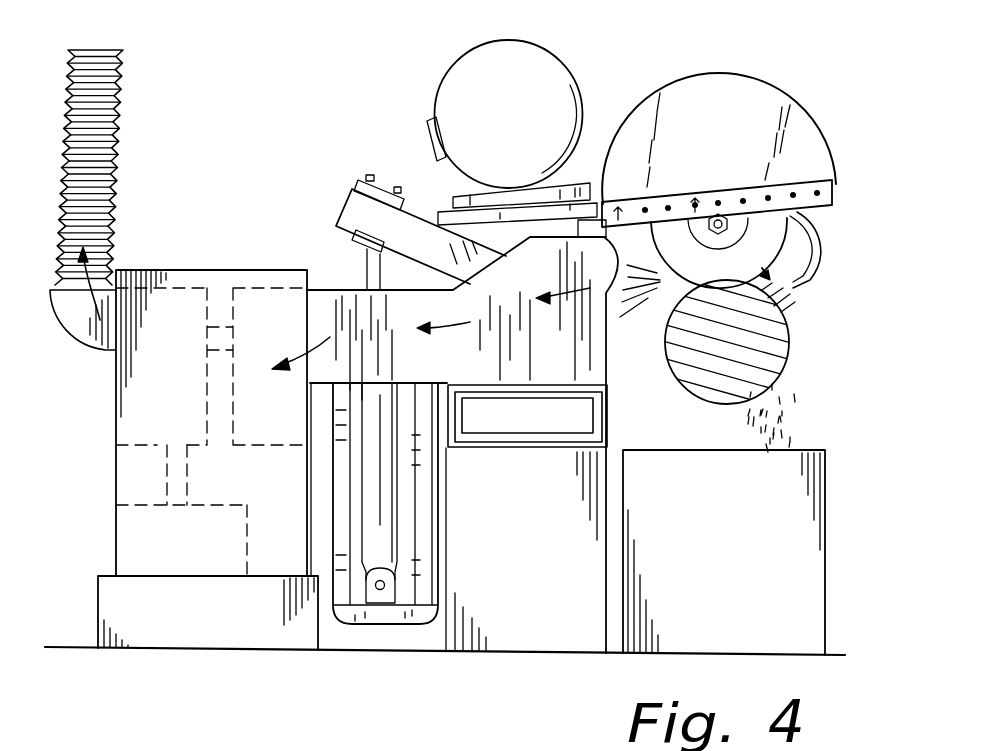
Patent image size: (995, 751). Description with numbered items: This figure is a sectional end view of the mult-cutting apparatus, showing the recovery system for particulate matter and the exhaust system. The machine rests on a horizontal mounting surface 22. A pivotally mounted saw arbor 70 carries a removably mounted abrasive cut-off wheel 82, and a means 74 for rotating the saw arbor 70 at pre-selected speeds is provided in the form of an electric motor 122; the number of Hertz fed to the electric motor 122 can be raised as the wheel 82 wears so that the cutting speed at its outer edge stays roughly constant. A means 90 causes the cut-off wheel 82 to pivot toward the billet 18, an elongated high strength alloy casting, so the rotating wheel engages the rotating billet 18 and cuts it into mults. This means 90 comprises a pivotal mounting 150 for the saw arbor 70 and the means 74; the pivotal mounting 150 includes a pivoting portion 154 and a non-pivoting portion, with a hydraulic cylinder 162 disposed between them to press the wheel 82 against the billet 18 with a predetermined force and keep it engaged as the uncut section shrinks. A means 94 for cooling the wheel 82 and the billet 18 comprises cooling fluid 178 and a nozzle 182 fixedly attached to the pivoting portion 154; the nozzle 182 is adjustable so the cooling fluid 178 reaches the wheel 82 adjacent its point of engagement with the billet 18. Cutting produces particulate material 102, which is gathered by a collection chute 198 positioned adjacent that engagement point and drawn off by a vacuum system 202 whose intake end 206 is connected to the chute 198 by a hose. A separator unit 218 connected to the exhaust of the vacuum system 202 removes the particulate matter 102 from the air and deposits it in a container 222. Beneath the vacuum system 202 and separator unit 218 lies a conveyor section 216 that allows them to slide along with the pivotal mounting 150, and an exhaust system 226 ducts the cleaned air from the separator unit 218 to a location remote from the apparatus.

The billet 18 is at (789, 328).
The horizontal mounting surface 22 is at (606, 372).
The saw arbor 70 is at (720, 214).
The means for rotating the saw arbor 74 is at (460, 62).
The abrasive cut-off wheel 82 is at (680, 232).
The means for causing the abrasive cut-off wheel to pivot toward the billet 90 is at (407, 503).
The means for cooling the abrasive cut-off wheel and the billet 94 is at (815, 240).
The particulate material 102 is at (628, 312).
The electric motor 122 is at (540, 67).
The pivotal mounting 150 is at (590, 158).
The pivoting portion 154 is at (410, 225).
The hydraulic cylinder 162 is at (335, 530).
The cooling fluid 178 is at (778, 312).
The nozzle 182 is at (793, 284).
The collection chute 198 is at (532, 371).
The vacuum system 202 is at (243, 310).
The intake end 206 is at (325, 290).
The conveyor section 216 is at (99, 575).
The separator unit 218 is at (123, 420).
The container 222 is at (198, 548).
The exhaust system 226 is at (128, 143).